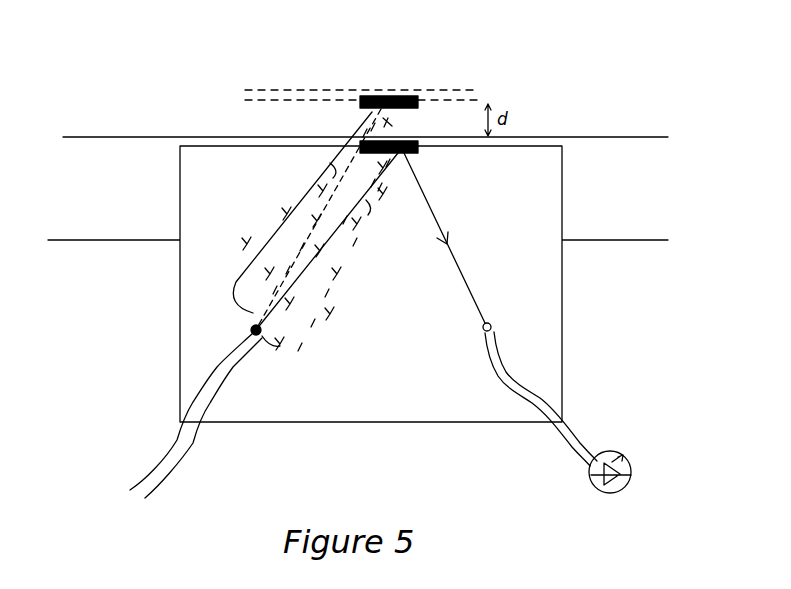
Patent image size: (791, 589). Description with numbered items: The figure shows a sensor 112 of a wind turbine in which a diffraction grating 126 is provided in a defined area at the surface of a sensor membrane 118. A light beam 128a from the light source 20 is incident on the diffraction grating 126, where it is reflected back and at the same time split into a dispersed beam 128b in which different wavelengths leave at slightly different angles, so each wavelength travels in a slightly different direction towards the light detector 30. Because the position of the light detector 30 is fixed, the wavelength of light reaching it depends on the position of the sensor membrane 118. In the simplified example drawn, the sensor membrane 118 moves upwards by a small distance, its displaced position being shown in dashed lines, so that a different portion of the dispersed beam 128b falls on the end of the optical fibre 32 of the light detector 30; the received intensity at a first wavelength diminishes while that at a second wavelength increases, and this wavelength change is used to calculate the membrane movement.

The sensor 112 is at (255, 63).
The sensor membrane 118 is at (544, 137).
The diffraction grating 126 is at (405, 140).
The light beam 128a is at (468, 283).
The dispersed beam 128b is at (262, 338).
The light source 20 is at (594, 419).
The light detector 30 is at (123, 471).
The optical fibre 32 is at (180, 447).